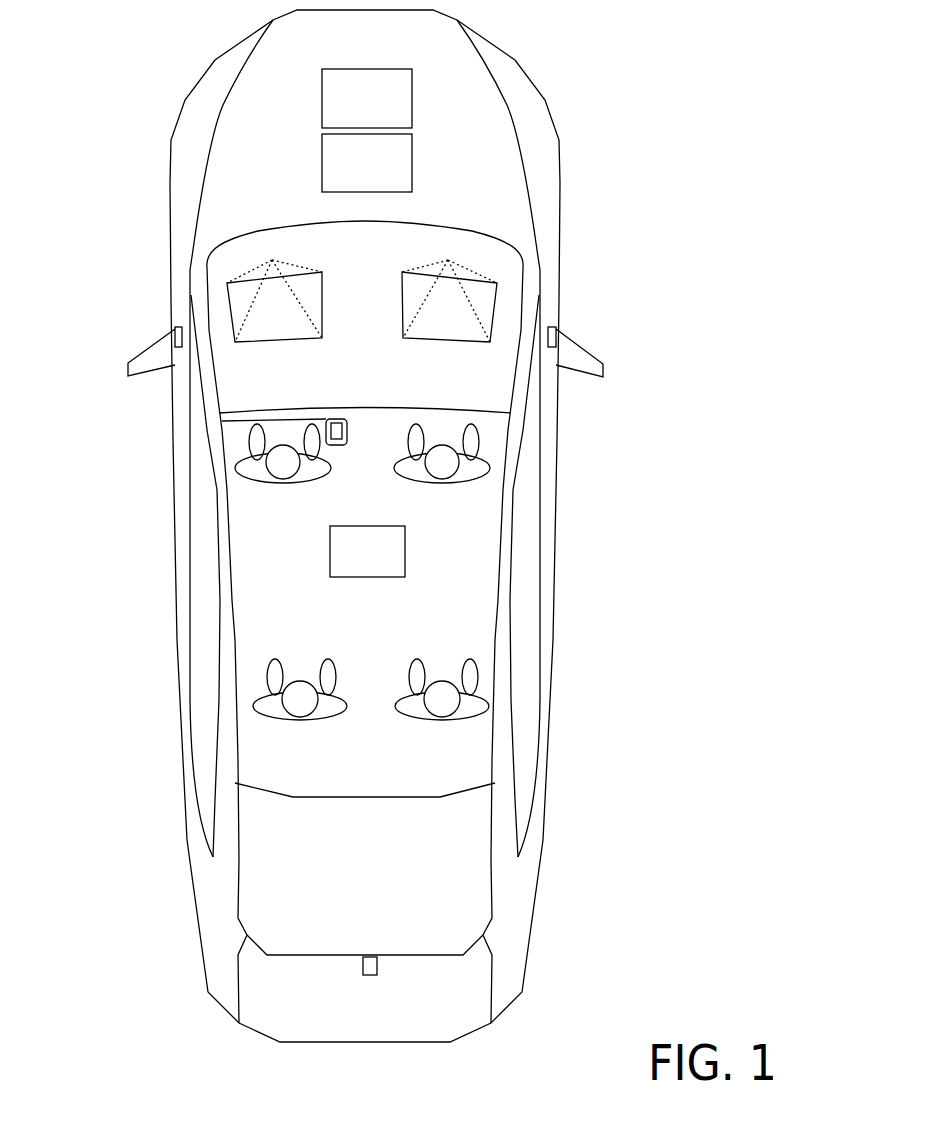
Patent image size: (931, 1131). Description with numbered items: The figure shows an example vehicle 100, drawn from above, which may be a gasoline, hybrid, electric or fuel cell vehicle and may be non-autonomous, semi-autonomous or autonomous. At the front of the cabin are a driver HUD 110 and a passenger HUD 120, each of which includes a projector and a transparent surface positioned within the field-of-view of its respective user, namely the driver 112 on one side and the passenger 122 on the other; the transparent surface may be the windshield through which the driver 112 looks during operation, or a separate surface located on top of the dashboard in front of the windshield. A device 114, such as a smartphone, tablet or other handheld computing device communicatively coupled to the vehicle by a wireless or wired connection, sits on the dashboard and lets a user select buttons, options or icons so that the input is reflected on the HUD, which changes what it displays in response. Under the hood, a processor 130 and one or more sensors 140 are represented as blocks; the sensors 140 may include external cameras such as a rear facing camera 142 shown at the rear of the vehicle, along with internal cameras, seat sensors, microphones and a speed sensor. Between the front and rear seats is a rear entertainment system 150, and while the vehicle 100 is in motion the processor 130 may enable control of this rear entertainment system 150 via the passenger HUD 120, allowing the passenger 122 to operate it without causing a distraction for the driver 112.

The vehicle 100 is at (171, 228).
The driver HUD 110 is at (283, 272).
The passenger HUD 120 is at (463, 272).
The driver 112 is at (236, 466).
The passenger 122 is at (491, 466).
The device 114 is at (222, 413).
The processor 130 is at (367, 98).
The sensors 140 is at (367, 163).
The rear entertainment system 150 is at (367, 551).
The rear facing camera 142 is at (363, 968).